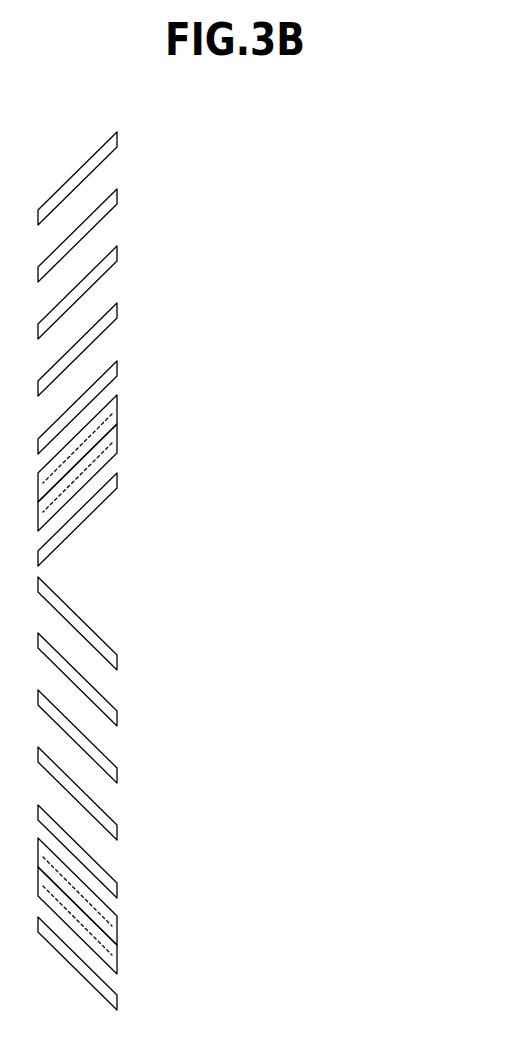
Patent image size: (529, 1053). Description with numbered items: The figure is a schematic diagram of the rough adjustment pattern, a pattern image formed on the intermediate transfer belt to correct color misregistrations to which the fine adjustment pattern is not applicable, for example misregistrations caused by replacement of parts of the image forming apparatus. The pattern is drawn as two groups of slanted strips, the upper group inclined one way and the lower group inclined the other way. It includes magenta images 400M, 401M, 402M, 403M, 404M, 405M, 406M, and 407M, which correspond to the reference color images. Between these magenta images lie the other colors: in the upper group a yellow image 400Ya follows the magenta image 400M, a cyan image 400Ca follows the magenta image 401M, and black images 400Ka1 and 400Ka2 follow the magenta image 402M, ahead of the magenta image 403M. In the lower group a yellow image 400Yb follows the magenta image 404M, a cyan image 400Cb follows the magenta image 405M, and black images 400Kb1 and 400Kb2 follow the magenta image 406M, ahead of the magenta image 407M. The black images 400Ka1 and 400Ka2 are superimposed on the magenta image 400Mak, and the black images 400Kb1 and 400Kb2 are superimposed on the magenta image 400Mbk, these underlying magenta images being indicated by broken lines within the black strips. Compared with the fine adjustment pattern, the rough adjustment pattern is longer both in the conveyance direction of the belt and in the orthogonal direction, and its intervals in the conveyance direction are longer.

The magenta image 400M is at (117, 133).
The yellow image 400Ya is at (117, 190).
The magenta image 401M is at (117, 247).
The cyan image 400Ca is at (117, 304).
The magenta image 402M is at (117, 362).
The black image 400Ka1 is at (117, 396).
The black image 400Ka2 is at (117, 448).
The magenta image 403M is at (117, 474).
The magenta image 400Mak is at (117, 422).
The magenta image 404M is at (117, 657).
The yellow image 400Yb is at (117, 713).
The magenta image 405M is at (117, 770).
The cyan image 400Cb is at (117, 827).
The magenta image 406M is at (117, 885).
The black image 400Kb1 is at (117, 918).
The black image 400Kb2 is at (117, 970).
The magenta image 407M is at (117, 997).
The magenta image 400Mbk is at (117, 943).